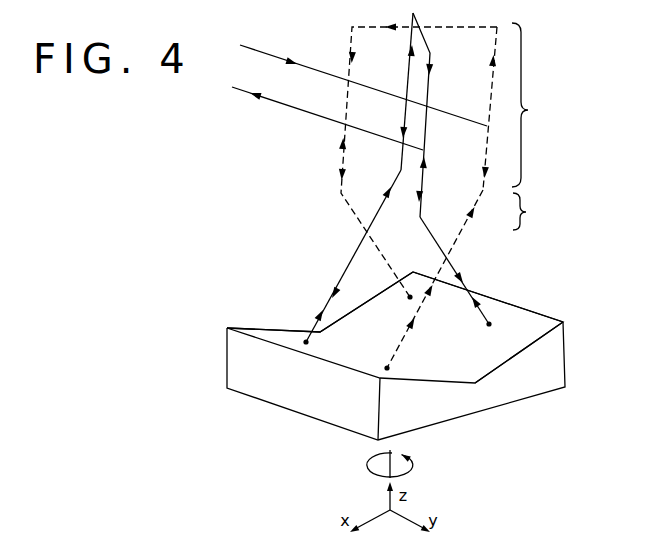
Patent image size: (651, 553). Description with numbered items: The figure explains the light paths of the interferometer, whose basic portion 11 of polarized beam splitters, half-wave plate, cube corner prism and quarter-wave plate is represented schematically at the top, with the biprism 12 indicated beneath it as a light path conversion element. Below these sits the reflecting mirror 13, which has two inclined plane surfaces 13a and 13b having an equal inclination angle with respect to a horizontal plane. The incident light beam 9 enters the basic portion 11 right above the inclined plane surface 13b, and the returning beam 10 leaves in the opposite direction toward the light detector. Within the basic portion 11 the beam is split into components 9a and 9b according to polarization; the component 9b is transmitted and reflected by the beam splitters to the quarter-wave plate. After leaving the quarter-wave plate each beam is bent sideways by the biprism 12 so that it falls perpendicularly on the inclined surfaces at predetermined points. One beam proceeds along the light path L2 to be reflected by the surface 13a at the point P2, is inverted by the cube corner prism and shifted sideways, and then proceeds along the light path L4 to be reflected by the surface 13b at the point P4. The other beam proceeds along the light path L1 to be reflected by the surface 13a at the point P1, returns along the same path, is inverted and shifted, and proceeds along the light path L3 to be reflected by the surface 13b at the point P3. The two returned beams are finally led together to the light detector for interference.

The incident light beam 9 is at (272, 54).
The return light beam 10 is at (278, 103).
The first beam component 9a is at (402, 105).
The light beam 9b is at (487, 150).
The basic portion 11 is at (535, 105).
The biprism 12 is at (536, 211).
The reflecting mirror 13 is at (302, 405).
The inclined plane surface 13a is at (267, 330).
The inclined plane surface 13b is at (535, 318).
The light path L1 is at (400, 164).
The light path L2 is at (480, 193).
The light path L3 is at (430, 236).
The light path L4 is at (345, 213).
The point P1 is at (322, 350).
The point P2 is at (371, 363).
The point P3 is at (505, 333).
The point P4 is at (395, 305).